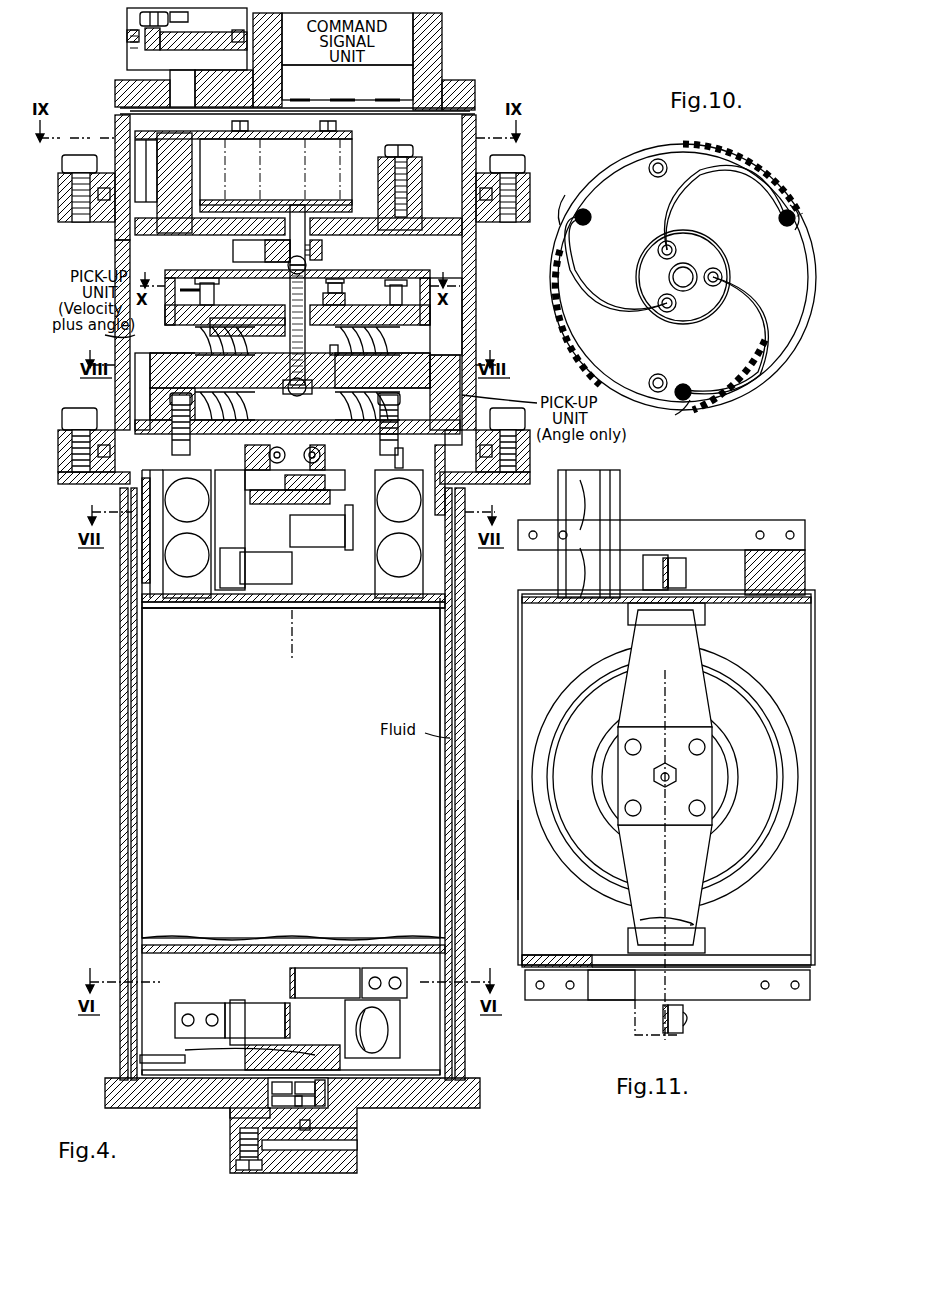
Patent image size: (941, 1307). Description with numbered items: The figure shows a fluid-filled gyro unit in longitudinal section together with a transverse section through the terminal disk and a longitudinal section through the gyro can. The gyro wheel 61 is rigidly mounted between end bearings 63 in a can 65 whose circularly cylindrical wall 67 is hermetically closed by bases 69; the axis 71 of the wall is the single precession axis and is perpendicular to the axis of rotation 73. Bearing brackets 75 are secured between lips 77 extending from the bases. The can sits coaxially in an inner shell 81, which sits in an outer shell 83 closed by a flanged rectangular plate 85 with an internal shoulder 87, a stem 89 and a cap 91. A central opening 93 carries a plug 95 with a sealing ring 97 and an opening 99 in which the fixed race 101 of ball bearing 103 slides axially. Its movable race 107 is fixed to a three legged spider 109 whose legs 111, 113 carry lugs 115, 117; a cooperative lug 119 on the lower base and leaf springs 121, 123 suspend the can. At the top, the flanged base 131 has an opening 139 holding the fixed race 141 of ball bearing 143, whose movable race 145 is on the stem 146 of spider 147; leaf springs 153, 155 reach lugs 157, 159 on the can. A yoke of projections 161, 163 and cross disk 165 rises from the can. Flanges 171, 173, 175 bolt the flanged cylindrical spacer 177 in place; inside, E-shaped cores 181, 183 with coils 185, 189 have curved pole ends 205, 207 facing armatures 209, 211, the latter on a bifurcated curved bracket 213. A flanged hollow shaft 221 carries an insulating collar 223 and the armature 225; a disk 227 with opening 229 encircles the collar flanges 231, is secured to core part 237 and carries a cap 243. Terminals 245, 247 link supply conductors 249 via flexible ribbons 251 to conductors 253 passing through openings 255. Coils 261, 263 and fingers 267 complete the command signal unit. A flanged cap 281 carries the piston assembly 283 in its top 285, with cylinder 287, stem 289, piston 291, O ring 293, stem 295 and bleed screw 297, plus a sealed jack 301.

In FIG. 11, the gyro wheel 61 is at (590, 855).
In FIG. 11, the end bearings 63 is at (654, 777).
In FIG. 4, the can 65 is at (306, 863).
In FIG. 11, the can 65 is at (509, 873).
In FIG. 4, the circularly cylindrical wall 67 is at (160, 650).
In FIG. 11, the circularly cylindrical wall 67 is at (518, 638).
In FIG. 4, the bases 69 is at (225, 605).
In FIG. 11, the bases 69 is at (590, 605).
In FIG. 4, the axis 71 is at (300, 608).
In FIG. 11, the axis 71 is at (690, 915).
In FIG. 11, the axis of rotation 73 is at (677, 775).
In FIG. 11, the bearing brackets 75 is at (685, 640).
In FIG. 11, the lips 77 is at (705, 613).
In FIG. 4, the inner shell 81 is at (135, 876).
In FIG. 4, the outer shell 83 is at (118, 852).
In FIG. 4, the flanged rectangular plate 85 is at (410, 1108).
In FIG. 4, the internal shoulder 87 is at (470, 1080).
In FIG. 4, the stem 89 is at (240, 1140).
In FIG. 4, the cap 91 is at (236, 1168).
In FIG. 4, the central opening 93 is at (320, 1150).
In FIG. 4, the plug 95 is at (230, 1120).
In FIG. 4, the sealing ring 97 is at (310, 1128).
In FIG. 4, the opening 99 is at (318, 1103).
In FIG. 4, the fixed race 101 is at (318, 1088).
In FIG. 4, the ball bearing 103 is at (272, 1088).
In FIG. 4, the movable race 107 is at (272, 1102).
In FIG. 4, the three legged spider 109 is at (300, 1045).
In FIG. 4, the leg 111 is at (180, 1048).
In FIG. 4, the leg 113 is at (400, 1044).
In FIG. 4, the lug 115 is at (175, 1028).
In FIG. 4, the lug 117 is at (392, 1020).
In FIG. 11, the cooperative lug 119 is at (565, 970).
In FIG. 4, the leaf spring 121 is at (255, 1005).
In FIG. 11, the leaf spring 121 is at (670, 1035).
In FIG. 4, the leaf spring 123 is at (290, 983).
In FIG. 11, the leaf spring 123 is at (625, 993).
In FIG. 4, the flanged base 131 is at (52, 447).
In FIG. 4, the opening 139 is at (317, 531).
In FIG. 4, the fixed race 141 is at (281, 483).
In FIG. 4, the ball bearing 143 is at (248, 450).
In FIG. 4, the movable race 145 is at (320, 455).
In FIG. 4, the stem 146 is at (325, 488).
In FIG. 4, the spider 147 is at (270, 504).
In FIG. 4, the leaf spring 153 is at (292, 568).
In FIG. 11, the leaf spring 153 is at (686, 565).
In FIG. 4, the leaf spring 155 is at (290, 536).
In FIG. 11, the leaf spring 155 is at (677, 520).
In FIG. 4, the lug 157 is at (230, 560).
In FIG. 11, the lug 157 is at (655, 555).
In FIG. 4, the lug 159 is at (355, 512).
In FIG. 11, the lug 159 is at (770, 522).
In FIG. 4, the projection 161 is at (195, 578).
In FIG. 11, the projection 161 is at (610, 500).
In FIG. 4, the projection 163 is at (400, 578).
In FIG. 4, the cross disk 165 is at (414, 455).
In FIG. 4, the flange 171 is at (58, 480).
In FIG. 4, the flange 173 is at (98, 462).
In FIG. 4, the flange 175 is at (62, 420).
In FIG. 4, the flanged cylindrical spacer 177 is at (115, 244).
In FIG. 4, the E-shaped core 181 is at (175, 345).
In FIG. 4, the E-shaped core 183 is at (379, 345).
In FIG. 4, the coil 185 is at (290, 370).
In FIG. 4, the coil 189 is at (375, 333).
In FIG. 4, the pole end 205 is at (143, 360).
In FIG. 4, the pole end 207 is at (462, 337).
In FIG. 4, the armature 209 is at (150, 400).
In FIG. 4, the armature 211 is at (444, 382).
In FIG. 4, the bifurcated curved bracket 213 is at (440, 470).
In FIG. 4, the flanged hollow shaft 221 is at (322, 248).
In FIG. 10, the flanged hollow shaft 221 is at (657, 276).
In FIG. 4, the insulating collar 223 is at (250, 320).
In FIG. 4, the armature 225 is at (165, 140).
In FIG. 4, the disk 227 is at (445, 318).
In FIG. 10, the disk 227 is at (778, 345).
In FIG. 4, the opening 229 is at (346, 299).
In FIG. 10, the opening 229 is at (710, 218).
In FIG. 4, the flanges 231 is at (382, 370).
In FIG. 10, the flanges 231 is at (708, 253).
In FIG. 4, the core part 237 is at (115, 130).
In FIG. 4, the cap 243 is at (415, 278).
In FIG. 10, the cap 243 is at (728, 152).
In FIG. 4, the terminals 245 is at (204, 291).
In FIG. 10, the terminals 245 is at (683, 384).
In FIG. 4, the terminals 247 is at (392, 285).
In FIG. 10, the terminals 247 is at (722, 275).
In FIG. 10, the supply conductors 249 is at (585, 210).
In FIG. 4, the flexible ribbons 251 is at (347, 285).
In FIG. 10, the flexible ribbons 251 is at (690, 178).
In FIG. 4, the conductors 253 is at (293, 210).
In FIG. 4, the openings 255 is at (260, 250).
In FIG. 4, the coil 261 is at (402, 134).
In FIG. 4, the coil 263 is at (262, 150).
In FIG. 4, the finger 267 is at (197, 140).
In FIG. 4, the flanged cap 281 is at (475, 83).
In FIG. 4, the fluid pressure relieving piston assembly 283 is at (110, 47).
In FIG. 4, the top 285 is at (458, 80).
In FIG. 4, the cylinder 287 is at (127, 60).
In FIG. 4, the stem 289 is at (115, 92).
In FIG. 4, the piston 291 is at (210, 50).
In FIG. 4, the O ring 293 is at (150, 50).
In FIG. 4, the stem 295 is at (188, 17).
In FIG. 4, the screw 297 is at (140, 20).
In FIG. 4, the jack 301 is at (442, 28).